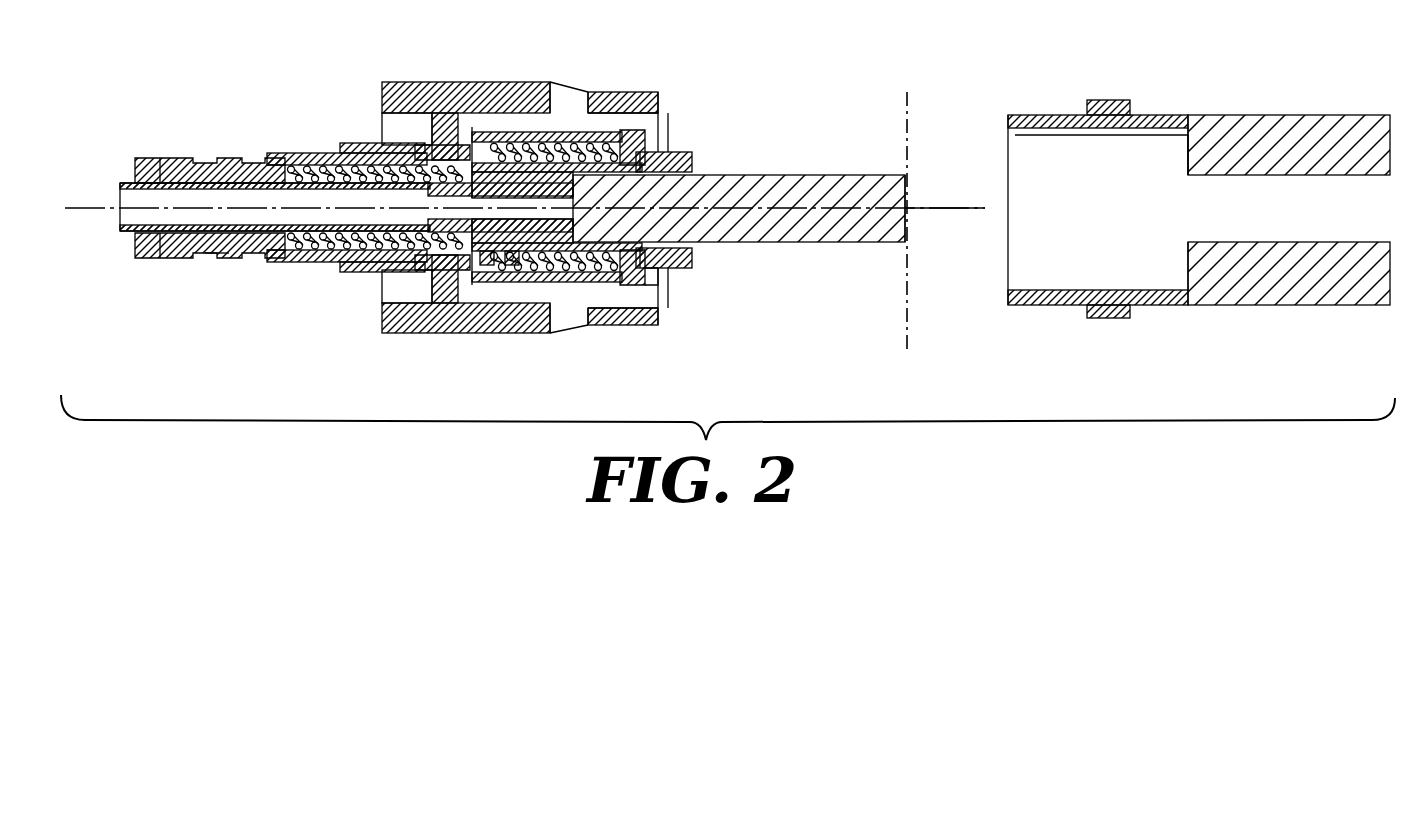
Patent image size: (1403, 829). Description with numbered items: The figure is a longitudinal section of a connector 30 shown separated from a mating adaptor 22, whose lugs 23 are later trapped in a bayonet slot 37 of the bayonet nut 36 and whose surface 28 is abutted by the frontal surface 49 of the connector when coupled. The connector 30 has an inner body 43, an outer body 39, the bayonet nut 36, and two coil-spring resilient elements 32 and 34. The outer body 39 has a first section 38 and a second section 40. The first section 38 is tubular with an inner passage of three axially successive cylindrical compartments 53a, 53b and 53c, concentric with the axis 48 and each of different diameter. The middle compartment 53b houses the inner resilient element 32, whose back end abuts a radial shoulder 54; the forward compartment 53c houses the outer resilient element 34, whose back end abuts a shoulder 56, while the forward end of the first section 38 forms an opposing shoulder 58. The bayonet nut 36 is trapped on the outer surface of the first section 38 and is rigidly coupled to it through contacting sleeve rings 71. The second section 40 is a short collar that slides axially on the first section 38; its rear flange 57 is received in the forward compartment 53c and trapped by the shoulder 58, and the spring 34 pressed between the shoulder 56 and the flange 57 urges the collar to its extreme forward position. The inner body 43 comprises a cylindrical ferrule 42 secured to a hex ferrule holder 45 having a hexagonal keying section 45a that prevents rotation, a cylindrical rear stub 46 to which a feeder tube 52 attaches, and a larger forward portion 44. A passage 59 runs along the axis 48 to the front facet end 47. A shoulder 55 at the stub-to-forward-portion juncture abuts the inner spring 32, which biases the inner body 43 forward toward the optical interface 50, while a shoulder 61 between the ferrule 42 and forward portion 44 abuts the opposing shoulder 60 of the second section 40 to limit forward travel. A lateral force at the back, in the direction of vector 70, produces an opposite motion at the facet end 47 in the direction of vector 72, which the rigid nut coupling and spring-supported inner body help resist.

The adaptor 22 is at (1245, 85).
The adaptor lug 23 is at (1118, 100).
The adaptor surface 28 is at (1185, 150).
The connector 30 is at (245, 85).
The inner resilient element 32 is at (305, 264).
The outer resilient element 34 is at (622, 128).
The bayonet nut 36 is at (455, 100).
The bayonet slot 37 is at (572, 98).
The first section 38 is at (240, 156).
The outer body 39 is at (312, 152).
The second section 40 is at (690, 150).
The ferrule 42 is at (765, 185).
The inner body 43 is at (730, 170).
The forward portion 44 is at (515, 130).
The ferrule holder 45 is at (440, 140).
The hexagonal keying section 45a is at (440, 305).
The rear stub 46 is at (425, 215).
The facet end 47 is at (908, 185).
The axis 48 is at (98, 208).
The frontal surface 49 is at (700, 258).
The optical interface 50 is at (907, 102).
The feeder tube 52 is at (125, 232).
The rear compartment 53a is at (160, 260).
The middle compartment 53b is at (345, 163).
The forward compartment 53c is at (565, 265).
The radial shoulder 54 is at (230, 260).
The shoulder 55 is at (485, 270).
The shoulder 56 is at (512, 270).
The flange 57 is at (660, 316).
The shoulder 58 is at (660, 275).
The passage 59 is at (910, 205).
The shoulder 60 is at (648, 118).
The shoulder 61 is at (655, 150).
The vector 70 is at (147, 155).
The sleeve rings 71 is at (428, 142).
The vector 72 is at (868, 246).